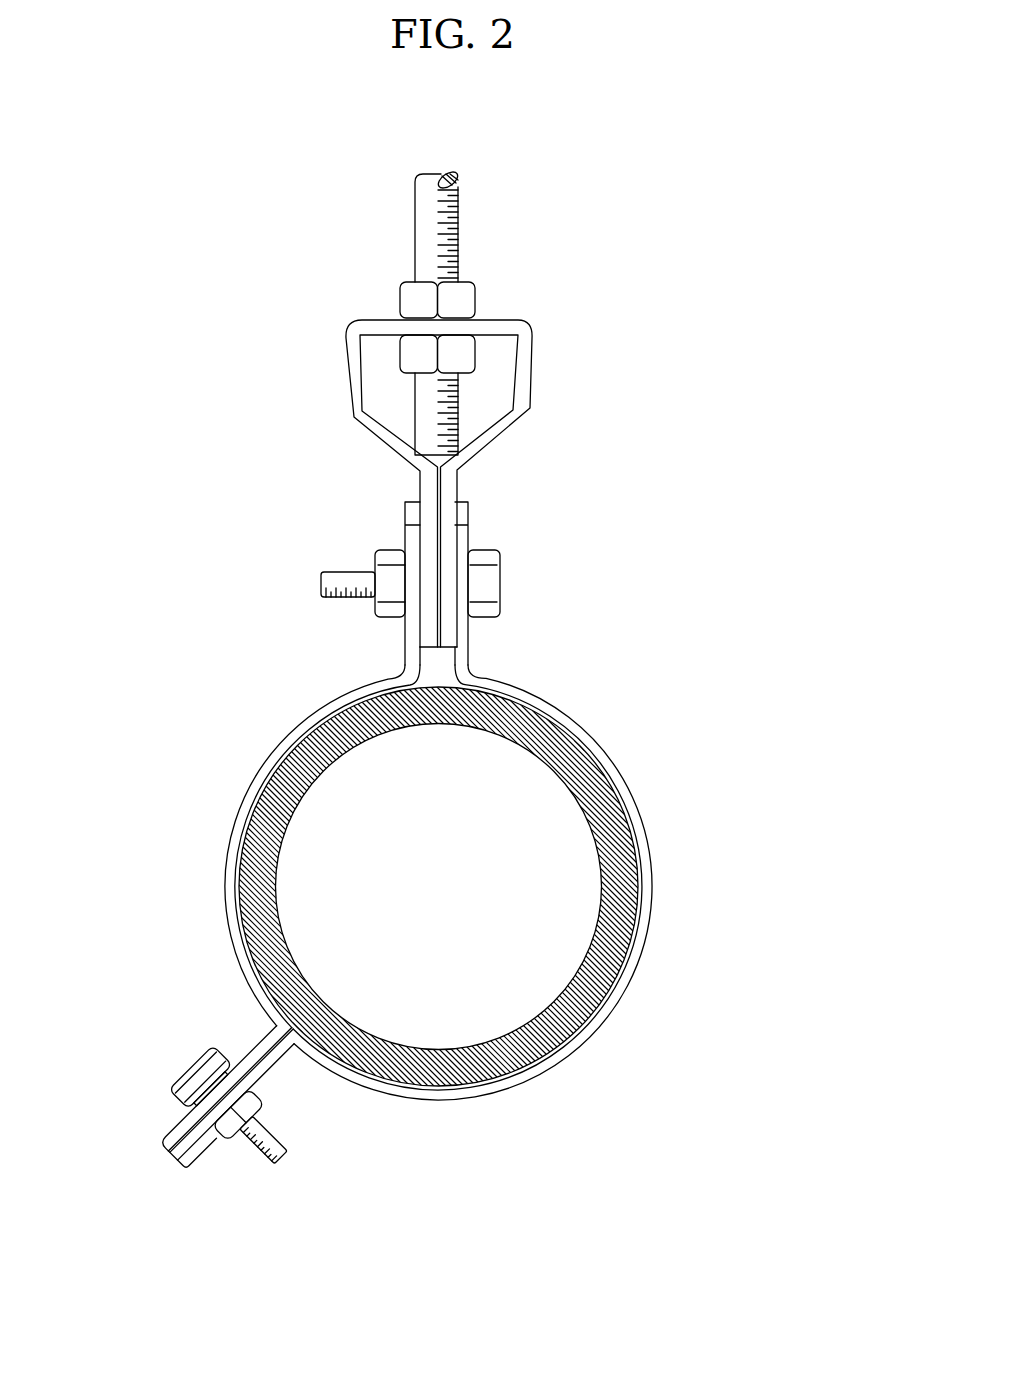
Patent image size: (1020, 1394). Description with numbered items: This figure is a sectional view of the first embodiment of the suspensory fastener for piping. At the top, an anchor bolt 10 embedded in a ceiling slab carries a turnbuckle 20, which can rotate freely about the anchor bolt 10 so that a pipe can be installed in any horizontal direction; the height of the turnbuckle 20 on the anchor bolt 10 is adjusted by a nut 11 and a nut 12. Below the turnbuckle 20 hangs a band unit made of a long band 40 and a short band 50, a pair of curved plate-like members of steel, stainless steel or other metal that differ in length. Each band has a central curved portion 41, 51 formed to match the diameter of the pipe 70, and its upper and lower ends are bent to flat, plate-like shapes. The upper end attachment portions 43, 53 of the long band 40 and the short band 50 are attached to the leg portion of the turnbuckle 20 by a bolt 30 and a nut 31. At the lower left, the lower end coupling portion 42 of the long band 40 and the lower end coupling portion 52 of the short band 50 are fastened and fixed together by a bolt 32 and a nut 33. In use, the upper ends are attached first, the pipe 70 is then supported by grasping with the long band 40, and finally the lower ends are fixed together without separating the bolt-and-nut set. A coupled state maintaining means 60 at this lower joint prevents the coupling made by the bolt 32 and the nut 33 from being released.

The anchor bolt 10 is at (457, 222).
The nut 11 is at (468, 303).
The nut 12 is at (468, 358).
The turnbuckle 20 is at (520, 380).
The bolt 30 is at (485, 557).
The nut 31 is at (388, 557).
The bolt 32 is at (190, 1067).
The nut 33 is at (217, 1145).
The long band 40 is at (488, 831).
The curved portion 41 is at (640, 915).
The lower end coupling portion 42 is at (294, 1044).
The upper end attachment portion 43 is at (460, 658).
The short band 50 is at (252, 835).
The curved portion 51 is at (230, 900).
The lower end coupling portion 52 is at (257, 1045).
The upper end attachment portion 53 is at (412, 660).
The coupled state maintaining means 60 is at (175, 1154).
The pipe 70 is at (620, 963).